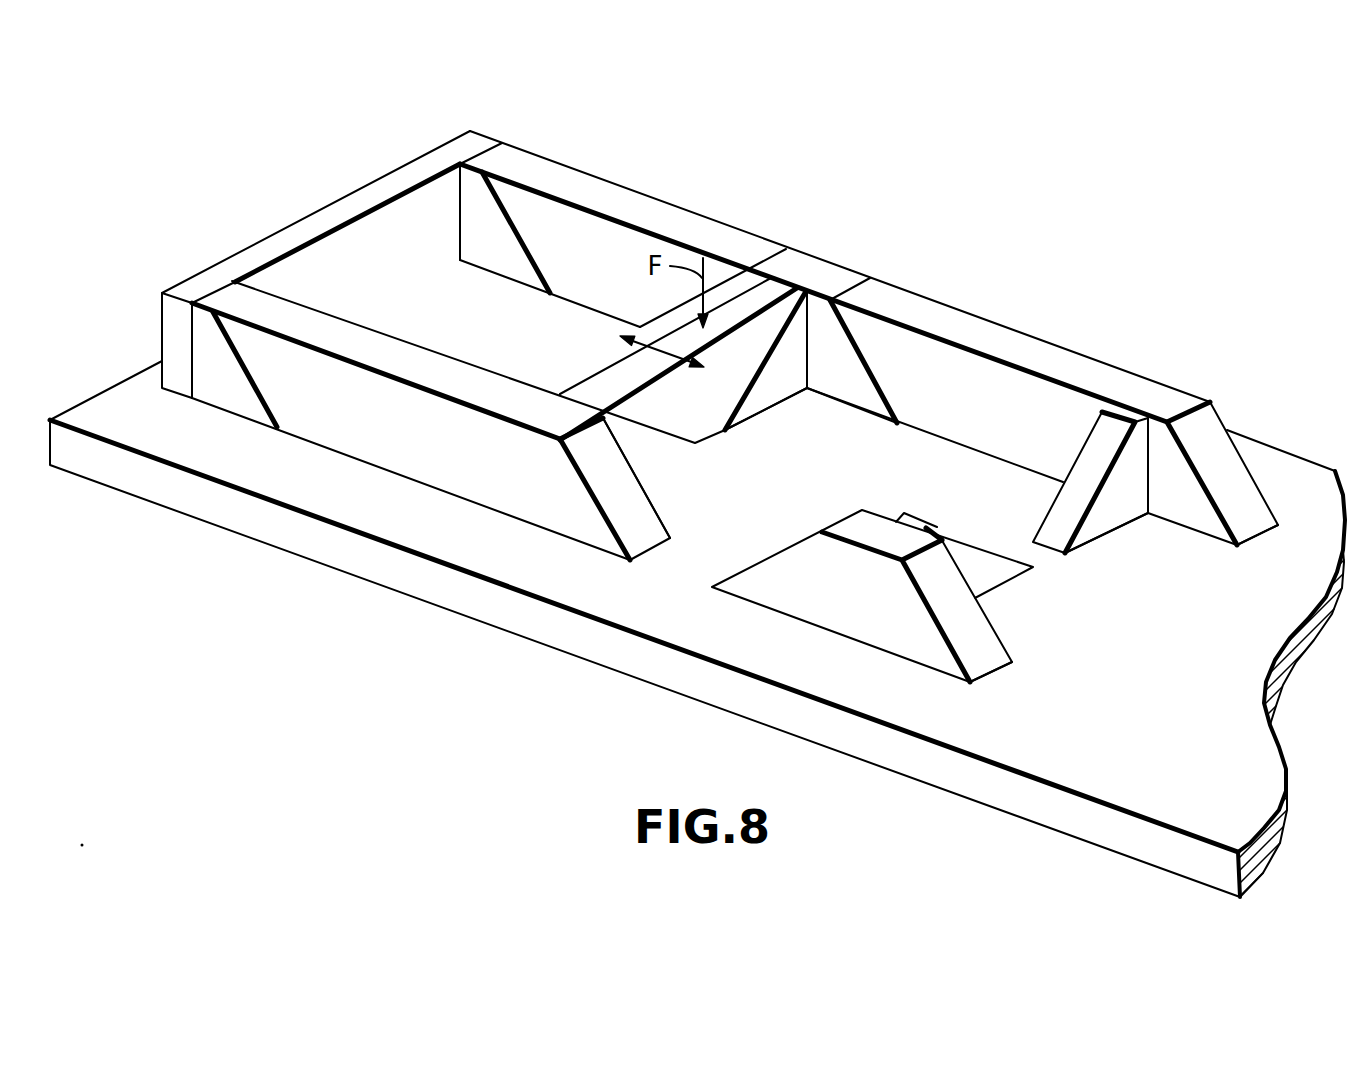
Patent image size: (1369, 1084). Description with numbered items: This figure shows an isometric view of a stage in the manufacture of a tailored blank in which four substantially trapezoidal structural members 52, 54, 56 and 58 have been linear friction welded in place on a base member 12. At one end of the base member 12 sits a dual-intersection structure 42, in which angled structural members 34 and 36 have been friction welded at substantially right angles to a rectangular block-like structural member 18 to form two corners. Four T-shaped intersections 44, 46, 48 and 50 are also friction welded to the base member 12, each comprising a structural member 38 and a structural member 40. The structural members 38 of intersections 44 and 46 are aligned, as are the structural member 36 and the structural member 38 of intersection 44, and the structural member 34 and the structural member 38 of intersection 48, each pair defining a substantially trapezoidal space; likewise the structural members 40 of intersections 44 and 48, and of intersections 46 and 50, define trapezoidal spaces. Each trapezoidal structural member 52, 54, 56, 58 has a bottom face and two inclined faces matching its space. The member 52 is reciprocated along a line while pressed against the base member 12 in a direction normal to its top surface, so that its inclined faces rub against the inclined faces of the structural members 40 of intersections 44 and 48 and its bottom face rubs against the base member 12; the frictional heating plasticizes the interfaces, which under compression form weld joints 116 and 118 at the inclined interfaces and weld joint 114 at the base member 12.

The base member 12 is at (163, 486).
The structural member 18 is at (223, 263).
The angled structural member 34 is at (254, 425).
The angled structural member 36 is at (553, 205).
The structural member 38 is at (836, 262).
The structural member 40 is at (776, 410).
The dual-intersection structure 42 is at (305, 187).
The T-shaped intersection 44 is at (878, 252).
The T-shaped intersection 46 is at (1212, 375).
The T-shaped intersection 48 is at (452, 524).
The T-shaped intersection 50 is at (763, 642).
The substantially trapezoidal structural member 52 is at (615, 372).
The substantially trapezoidal structural member 54 is at (325, 450).
The substantially trapezoidal structural member 56 is at (990, 330).
The substantially trapezoidal structural member 58 is at (625, 212).
The weld joint 114 is at (718, 437).
The weld joint 116 is at (744, 388).
The weld joint 118 is at (637, 414).